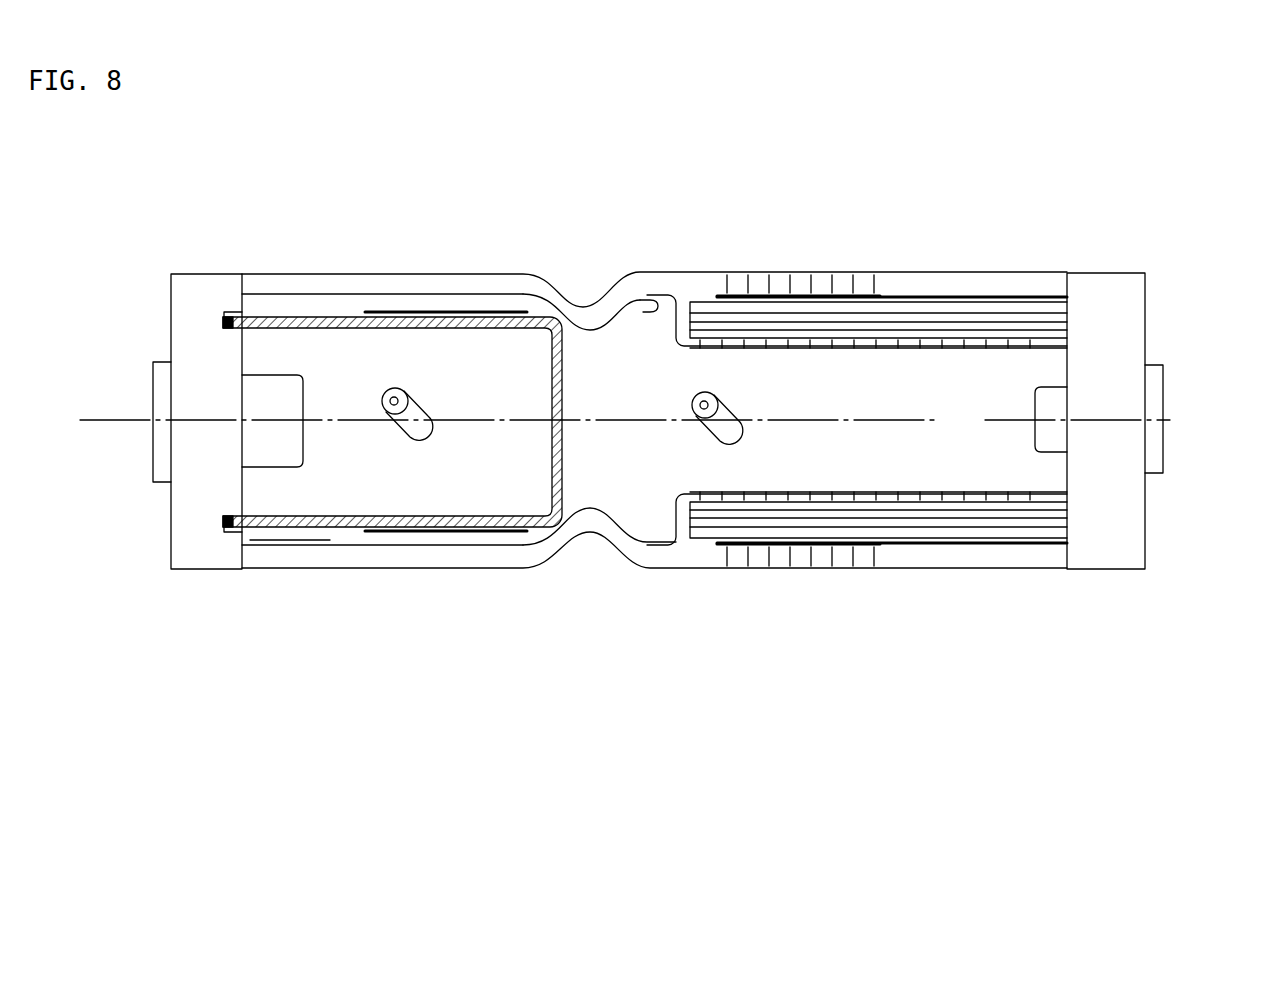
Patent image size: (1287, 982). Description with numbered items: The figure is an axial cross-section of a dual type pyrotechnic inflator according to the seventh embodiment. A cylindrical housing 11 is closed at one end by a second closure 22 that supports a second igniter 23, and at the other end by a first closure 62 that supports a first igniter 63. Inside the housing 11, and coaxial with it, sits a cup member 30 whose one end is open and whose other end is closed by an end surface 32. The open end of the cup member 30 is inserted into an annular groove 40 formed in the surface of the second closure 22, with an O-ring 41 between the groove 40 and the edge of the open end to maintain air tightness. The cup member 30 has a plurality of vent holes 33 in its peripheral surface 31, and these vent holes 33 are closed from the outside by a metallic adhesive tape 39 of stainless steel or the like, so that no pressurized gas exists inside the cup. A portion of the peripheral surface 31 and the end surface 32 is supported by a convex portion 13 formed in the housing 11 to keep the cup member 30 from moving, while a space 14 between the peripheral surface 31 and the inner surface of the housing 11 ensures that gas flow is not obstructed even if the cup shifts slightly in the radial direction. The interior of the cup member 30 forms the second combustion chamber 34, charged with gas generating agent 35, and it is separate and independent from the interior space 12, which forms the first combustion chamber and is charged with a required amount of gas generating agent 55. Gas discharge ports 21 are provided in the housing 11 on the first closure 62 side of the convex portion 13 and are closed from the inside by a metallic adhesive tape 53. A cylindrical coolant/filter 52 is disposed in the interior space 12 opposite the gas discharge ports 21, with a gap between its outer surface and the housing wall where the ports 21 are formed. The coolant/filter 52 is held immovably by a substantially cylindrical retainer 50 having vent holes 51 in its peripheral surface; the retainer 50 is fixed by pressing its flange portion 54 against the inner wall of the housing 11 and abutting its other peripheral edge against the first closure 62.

The cylindrical housing 11 is at (711, 271).
The interior space 12 is at (790, 472).
The convex portion 13 is at (583, 332).
The space 14 is at (373, 537).
The gas discharge ports 21 is at (858, 292).
The second closure 22 is at (190, 316).
The second igniter 23 is at (158, 377).
The cup member 30 is at (333, 533).
The peripheral surface 31 is at (302, 310).
The end surface 32 is at (565, 462).
The vent holes 33 is at (478, 530).
The second combustion chamber 34 is at (375, 488).
The gas generating agent 35 is at (420, 405).
The metallic adhesive tape 39 is at (435, 316).
The annular groove 40 is at (250, 532).
The O-ring 41 is at (230, 313).
The retainer 50 is at (902, 351).
The vent holes 51 is at (1045, 350).
The coolant/filter 52 is at (1013, 316).
The metallic adhesive tape 53 is at (850, 535).
The flange portion 54 is at (633, 306).
The gas generating agent 55 is at (735, 408).
The first closure 62 is at (1125, 528).
The first igniter 63 is at (1152, 375).